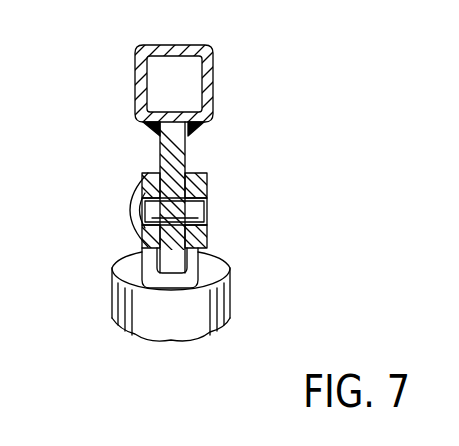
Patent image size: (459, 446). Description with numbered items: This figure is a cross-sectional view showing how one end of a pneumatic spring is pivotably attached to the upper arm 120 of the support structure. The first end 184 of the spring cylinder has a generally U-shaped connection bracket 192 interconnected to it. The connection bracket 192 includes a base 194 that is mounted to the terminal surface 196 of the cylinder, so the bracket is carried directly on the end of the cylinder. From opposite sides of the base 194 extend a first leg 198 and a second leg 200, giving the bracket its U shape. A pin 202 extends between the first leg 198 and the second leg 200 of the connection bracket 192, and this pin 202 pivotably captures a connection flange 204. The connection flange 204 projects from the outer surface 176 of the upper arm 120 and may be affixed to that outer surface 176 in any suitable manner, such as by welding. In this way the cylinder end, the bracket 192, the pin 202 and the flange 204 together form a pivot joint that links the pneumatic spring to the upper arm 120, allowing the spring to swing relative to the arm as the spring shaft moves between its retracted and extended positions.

The upper arm 120 is at (148, 47).
The outer surface 176 is at (213, 86).
The first end 184 is at (236, 292).
The connection bracket 192 is at (137, 257).
The base 194 is at (163, 281).
The terminal surface 196 is at (173, 291).
The first leg 198 is at (143, 176).
The second leg 200 is at (207, 178).
The pin 202 is at (203, 237).
The connection flange 204 is at (185, 168).